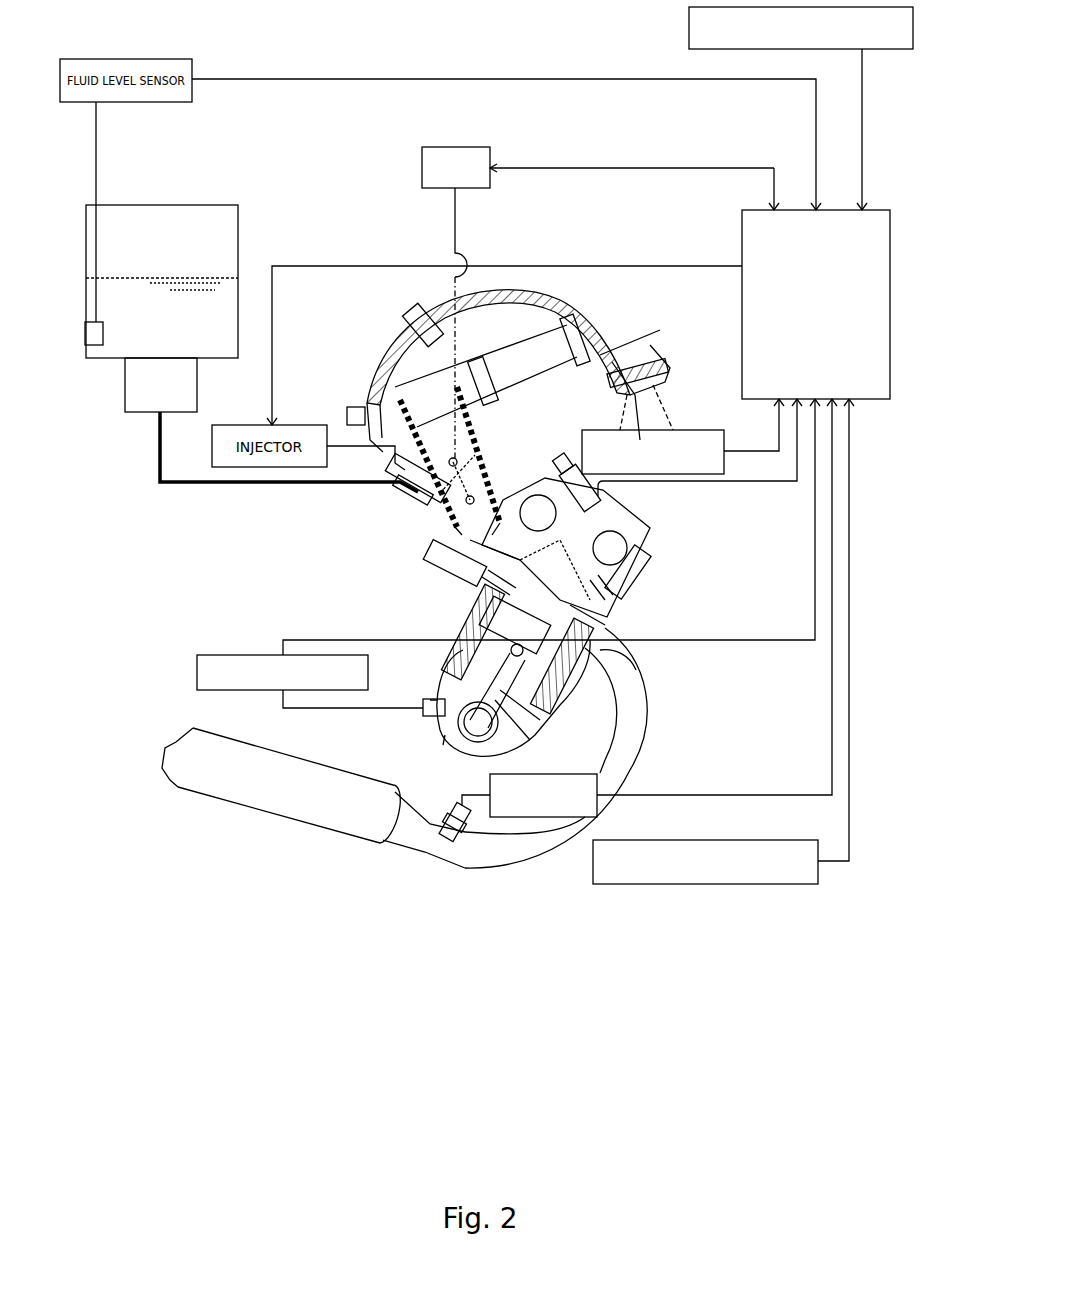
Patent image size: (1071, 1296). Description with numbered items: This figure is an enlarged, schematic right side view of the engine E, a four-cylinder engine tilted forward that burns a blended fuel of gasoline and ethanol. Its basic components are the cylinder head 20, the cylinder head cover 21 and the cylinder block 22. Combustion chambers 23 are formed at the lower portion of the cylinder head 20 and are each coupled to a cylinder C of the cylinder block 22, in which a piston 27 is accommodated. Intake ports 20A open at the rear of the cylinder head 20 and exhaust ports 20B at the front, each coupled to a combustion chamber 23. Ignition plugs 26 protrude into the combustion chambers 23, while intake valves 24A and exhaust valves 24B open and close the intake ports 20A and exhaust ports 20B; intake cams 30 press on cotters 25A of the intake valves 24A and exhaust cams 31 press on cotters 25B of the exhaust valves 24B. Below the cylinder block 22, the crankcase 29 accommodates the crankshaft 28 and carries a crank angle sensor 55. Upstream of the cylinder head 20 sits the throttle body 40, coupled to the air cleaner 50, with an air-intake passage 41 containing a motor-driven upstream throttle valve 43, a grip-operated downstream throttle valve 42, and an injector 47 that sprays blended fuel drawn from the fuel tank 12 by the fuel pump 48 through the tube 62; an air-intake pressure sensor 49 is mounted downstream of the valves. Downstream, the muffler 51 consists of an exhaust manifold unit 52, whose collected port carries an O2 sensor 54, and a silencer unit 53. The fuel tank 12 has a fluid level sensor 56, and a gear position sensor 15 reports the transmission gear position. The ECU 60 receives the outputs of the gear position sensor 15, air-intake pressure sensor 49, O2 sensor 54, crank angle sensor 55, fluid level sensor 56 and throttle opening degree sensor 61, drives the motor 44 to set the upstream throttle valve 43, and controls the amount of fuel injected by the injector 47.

The fuel tank 12 is at (206, 204).
The gear position sensor 15 is at (702, 884).
The cylinder head 20 is at (458, 580).
The intake port 20A is at (487, 552).
The exhaust port 20B is at (594, 613).
The cylinder head cover 21 is at (642, 522).
The cylinder block 22 is at (552, 697).
The combustion chamber 23 is at (500, 617).
The intake valve 24A is at (487, 588).
The exhaust valve 24B is at (614, 583).
The cotter 25A is at (430, 550).
The cotter 25B is at (641, 569).
The ignition plug 26 is at (608, 522).
The piston 27 is at (497, 636).
The crankshaft 28 is at (476, 728).
The crankcase 29 is at (518, 727).
The intake cam 30 is at (545, 497).
The exhaust cam 31 is at (627, 550).
The throttle body 40 is at (478, 483).
The air-intake passage 41 is at (430, 436).
The downstream throttle valve 42 is at (456, 531).
The upstream throttle valve 43 is at (473, 427).
The motor 44 is at (420, 168).
The injector 47 is at (412, 489).
The fuel pump 48 is at (137, 406).
The air-intake pressure sensor 49 is at (520, 463).
The air cleaner 50 is at (427, 311).
The muffler 51 is at (488, 890).
The exhaust manifold unit 52 is at (538, 858).
The silencer unit 53 is at (260, 810).
The O2 sensor 54 is at (441, 860).
The crank angle sensor 55 is at (430, 716).
The fluid level sensor 56 is at (83, 335).
The ECU 60 is at (742, 233).
The throttle opening degree sensor 61 is at (688, 28).
The tube 62 is at (229, 484).
The engine E is at (615, 325).
The cylinder C is at (522, 682).